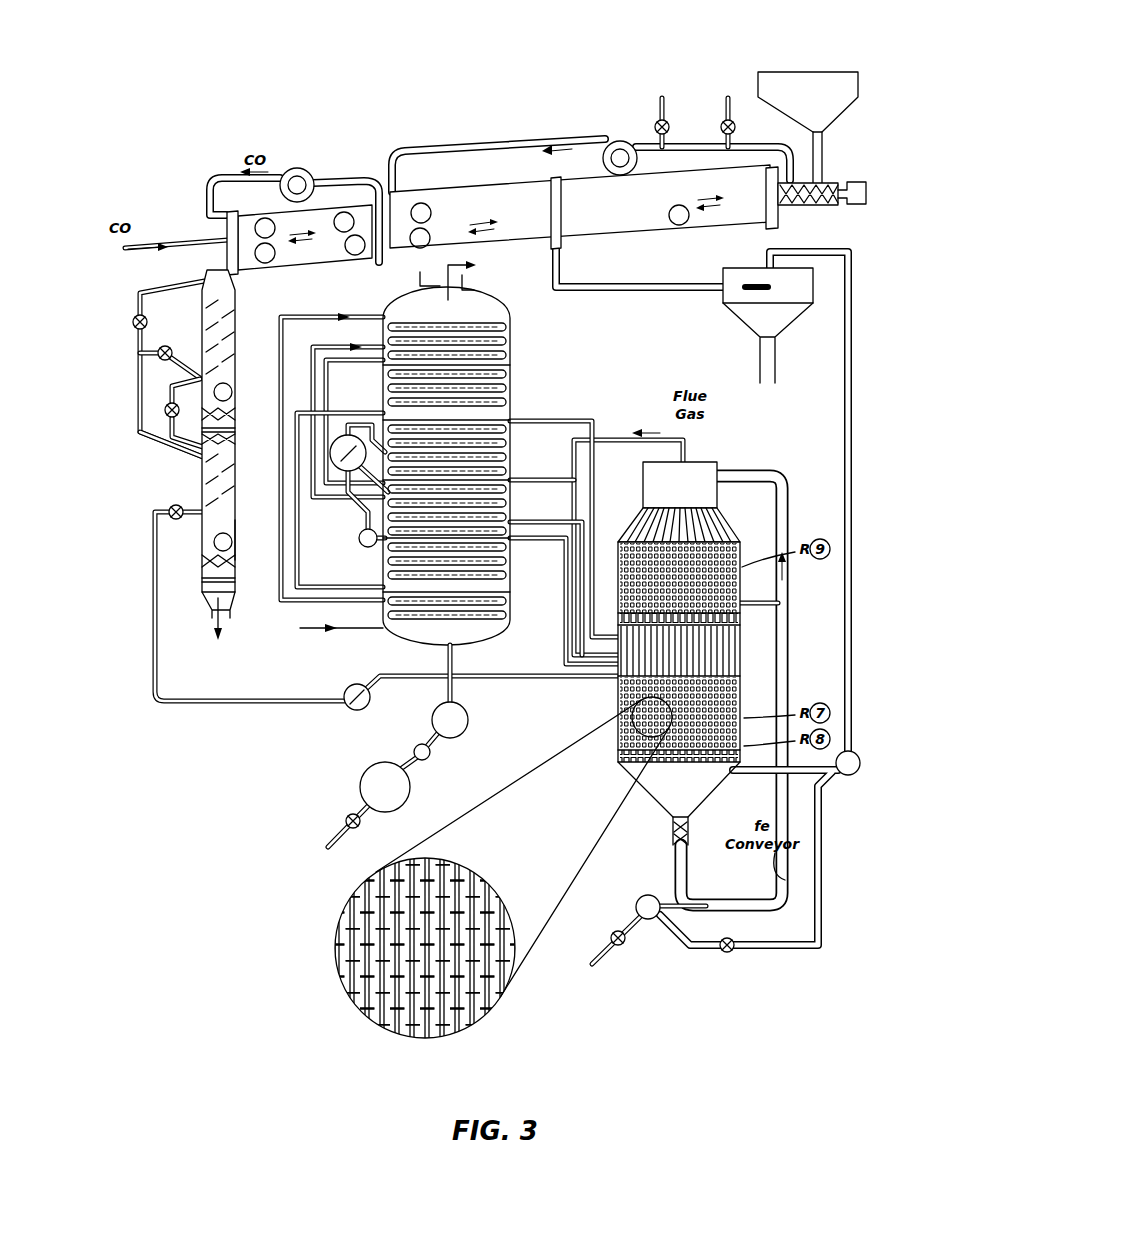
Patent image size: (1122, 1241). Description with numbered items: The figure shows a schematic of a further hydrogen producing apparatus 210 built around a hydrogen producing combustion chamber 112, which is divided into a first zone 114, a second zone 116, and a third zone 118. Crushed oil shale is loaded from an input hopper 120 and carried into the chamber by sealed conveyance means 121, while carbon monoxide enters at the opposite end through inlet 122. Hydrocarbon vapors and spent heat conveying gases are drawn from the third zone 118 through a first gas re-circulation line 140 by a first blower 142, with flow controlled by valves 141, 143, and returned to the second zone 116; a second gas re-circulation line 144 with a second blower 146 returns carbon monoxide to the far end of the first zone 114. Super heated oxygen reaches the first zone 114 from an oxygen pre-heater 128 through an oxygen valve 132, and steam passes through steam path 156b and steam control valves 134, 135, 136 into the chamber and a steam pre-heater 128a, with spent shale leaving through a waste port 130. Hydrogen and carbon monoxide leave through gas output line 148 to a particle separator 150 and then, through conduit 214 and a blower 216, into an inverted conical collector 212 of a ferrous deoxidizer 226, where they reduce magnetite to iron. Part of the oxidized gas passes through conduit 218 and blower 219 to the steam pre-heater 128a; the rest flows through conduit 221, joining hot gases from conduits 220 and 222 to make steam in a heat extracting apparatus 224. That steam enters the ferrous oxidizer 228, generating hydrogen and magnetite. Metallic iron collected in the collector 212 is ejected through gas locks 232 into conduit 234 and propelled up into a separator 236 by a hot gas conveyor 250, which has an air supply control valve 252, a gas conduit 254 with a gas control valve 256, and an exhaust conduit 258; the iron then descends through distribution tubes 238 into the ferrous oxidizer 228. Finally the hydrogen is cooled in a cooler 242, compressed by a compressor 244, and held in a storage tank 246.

The hydrogen producing apparatus 210 is at (468, 100).
The input hopper 120 is at (790, 72).
The sealed conveyance means 121 is at (812, 206).
The CO inlet conduit 122 is at (175, 238).
The first gas re-circulation line 140 is at (535, 150).
The valve 141 is at (730, 118).
The first blower 142 is at (619, 141).
The valve 143 is at (668, 118).
The second gas re-circulation line 144 is at (213, 175).
The second blower 146 is at (296, 167).
The first zone 114 is at (300, 266).
The second zone 116 is at (482, 186).
The third zone 118 is at (613, 228).
The gas output line 148 is at (648, 284).
The particle separator 150 is at (752, 313).
The oxygen pre-heater 128 is at (206, 308).
The steam pre-heater 128a is at (238, 530).
The waste port 130 is at (236, 603).
The oxygen valve 132 is at (156, 354).
The first steam control valve 134 is at (165, 406).
The second steam control valve 135 is at (133, 320).
The third steam control valve 136 is at (168, 511).
The steam path 156b is at (170, 447).
The hydrogen producing combustion chamber 112 is at (420, 272).
The heat extracting apparatus 224 is at (512, 302).
The conduit 220 is at (612, 440).
The conduit 221 is at (564, 606).
The conduit 222 is at (585, 635).
The separator 236 is at (712, 464).
The distribution tubes 238 is at (634, 530).
The conduit 214 is at (845, 394).
The ferrous oxidizer 228 is at (790, 602).
The conduit 234 is at (790, 620).
The ferrous deoxidizer 226 is at (746, 698).
The inverted conical collector 212 is at (652, 797).
The gas locks 232 is at (673, 836).
The hot gas conveyor 250 is at (637, 904).
The blower 216 is at (856, 775).
The exhaust conduit 258 is at (712, 916).
The gas conduit 254 is at (790, 950).
The air supply control valve 252 is at (630, 950).
The gas control valve 256 is at (730, 955).
The conduit 218 is at (272, 700).
The blower 219 is at (346, 687).
The cooler 242 is at (468, 726).
The compressor 244 is at (431, 758).
The storage tank 246 is at (410, 797).